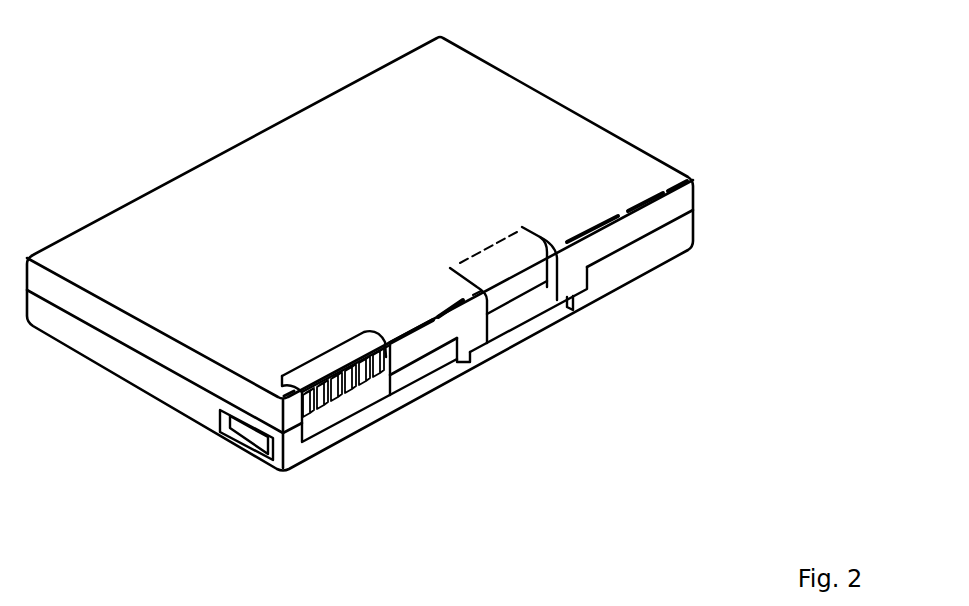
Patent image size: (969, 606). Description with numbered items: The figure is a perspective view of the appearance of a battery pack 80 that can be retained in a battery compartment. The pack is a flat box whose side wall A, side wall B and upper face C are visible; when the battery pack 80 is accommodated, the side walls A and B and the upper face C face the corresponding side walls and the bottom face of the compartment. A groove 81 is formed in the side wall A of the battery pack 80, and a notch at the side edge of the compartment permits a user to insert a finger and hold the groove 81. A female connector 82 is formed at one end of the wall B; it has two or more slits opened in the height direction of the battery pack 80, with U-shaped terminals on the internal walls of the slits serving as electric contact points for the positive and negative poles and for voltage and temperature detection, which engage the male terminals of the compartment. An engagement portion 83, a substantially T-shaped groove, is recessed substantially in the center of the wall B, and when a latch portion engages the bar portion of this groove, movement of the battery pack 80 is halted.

The battery pack 80 is at (263, 160).
The groove 81 is at (246, 430).
The female connector 82 is at (359, 400).
The engagement portion 83 is at (520, 305).
The side wall A is at (140, 362).
The side wall B is at (638, 248).
The upper face C is at (385, 207).